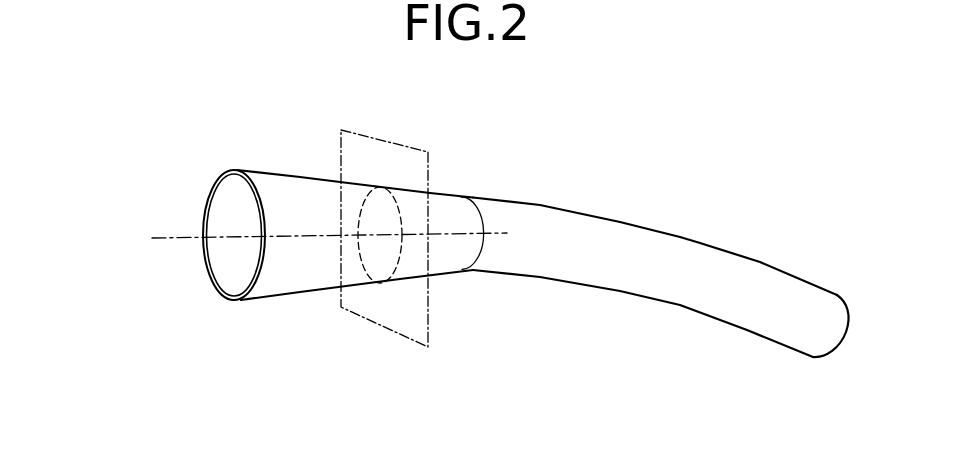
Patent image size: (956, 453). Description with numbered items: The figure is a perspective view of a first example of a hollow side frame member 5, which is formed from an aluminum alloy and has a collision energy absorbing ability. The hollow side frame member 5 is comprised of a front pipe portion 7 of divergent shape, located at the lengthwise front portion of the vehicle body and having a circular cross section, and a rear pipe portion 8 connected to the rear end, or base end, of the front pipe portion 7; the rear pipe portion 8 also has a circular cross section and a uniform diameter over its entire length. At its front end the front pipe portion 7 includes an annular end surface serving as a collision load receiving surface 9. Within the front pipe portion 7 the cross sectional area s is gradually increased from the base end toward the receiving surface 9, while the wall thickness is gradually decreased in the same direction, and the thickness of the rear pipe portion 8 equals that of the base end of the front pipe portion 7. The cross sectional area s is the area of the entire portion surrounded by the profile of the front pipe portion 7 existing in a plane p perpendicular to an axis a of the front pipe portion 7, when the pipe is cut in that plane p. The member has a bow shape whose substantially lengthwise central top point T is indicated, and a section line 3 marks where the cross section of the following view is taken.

The hollow side frame member 5 is at (500, 225).
The front pipe portion 7 is at (297, 183).
The rear pipe portion 8 is at (750, 270).
The collision load receiving surface 9 is at (218, 178).
The plane p is at (400, 152).
The cross sectional area s is at (368, 207).
The axis a is at (447, 233).
The top point T is at (608, 213).
The section line 3 is at (99, 227).